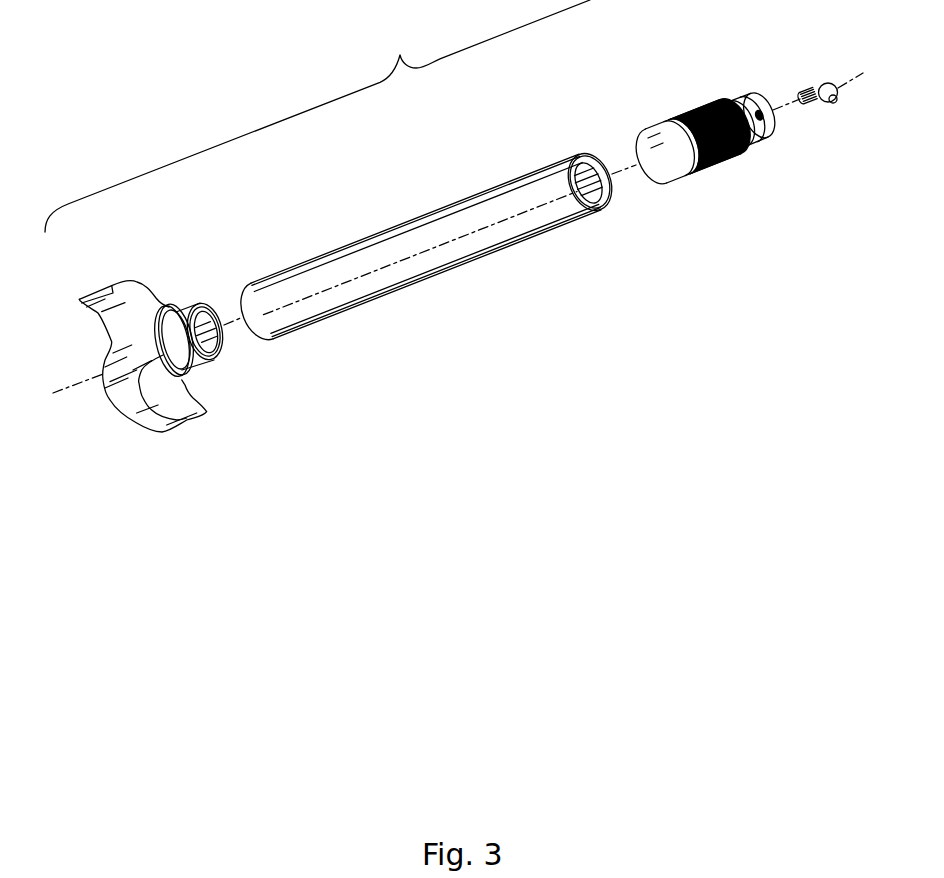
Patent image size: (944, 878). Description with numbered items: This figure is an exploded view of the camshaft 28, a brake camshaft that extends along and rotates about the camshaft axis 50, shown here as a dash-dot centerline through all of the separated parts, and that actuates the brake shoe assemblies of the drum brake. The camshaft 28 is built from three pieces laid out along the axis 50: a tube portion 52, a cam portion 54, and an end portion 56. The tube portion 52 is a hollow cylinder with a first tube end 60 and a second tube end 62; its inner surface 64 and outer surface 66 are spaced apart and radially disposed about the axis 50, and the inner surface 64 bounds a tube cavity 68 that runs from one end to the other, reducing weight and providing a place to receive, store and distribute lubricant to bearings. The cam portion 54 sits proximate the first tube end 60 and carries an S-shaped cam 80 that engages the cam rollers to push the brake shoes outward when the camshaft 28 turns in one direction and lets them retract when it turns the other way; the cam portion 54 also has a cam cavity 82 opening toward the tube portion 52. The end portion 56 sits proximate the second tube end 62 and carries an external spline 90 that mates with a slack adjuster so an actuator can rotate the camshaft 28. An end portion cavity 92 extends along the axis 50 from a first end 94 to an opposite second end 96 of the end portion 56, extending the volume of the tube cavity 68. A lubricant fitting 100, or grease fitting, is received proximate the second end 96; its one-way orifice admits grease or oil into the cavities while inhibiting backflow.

The camshaft 28 is at (317, 116).
The camshaft axis 50 is at (838, 90).
The tube portion 52 is at (430, 218).
The cam portion 54 is at (208, 314).
The end portion 56 is at (717, 145).
The first tube end 60 is at (176, 295).
The second tube end 62 is at (579, 155).
The inner surface 64 is at (594, 215).
The outer surface 66 is at (356, 242).
The tube cavity 68 is at (598, 166).
The cam 80 is at (114, 408).
The cam cavity 82 is at (227, 343).
The spline 90 is at (690, 108).
The end portion cavity 92 is at (759, 109).
The first end 94 is at (641, 178).
The second end 96 is at (773, 136).
The lubricant fitting 100 is at (827, 88).